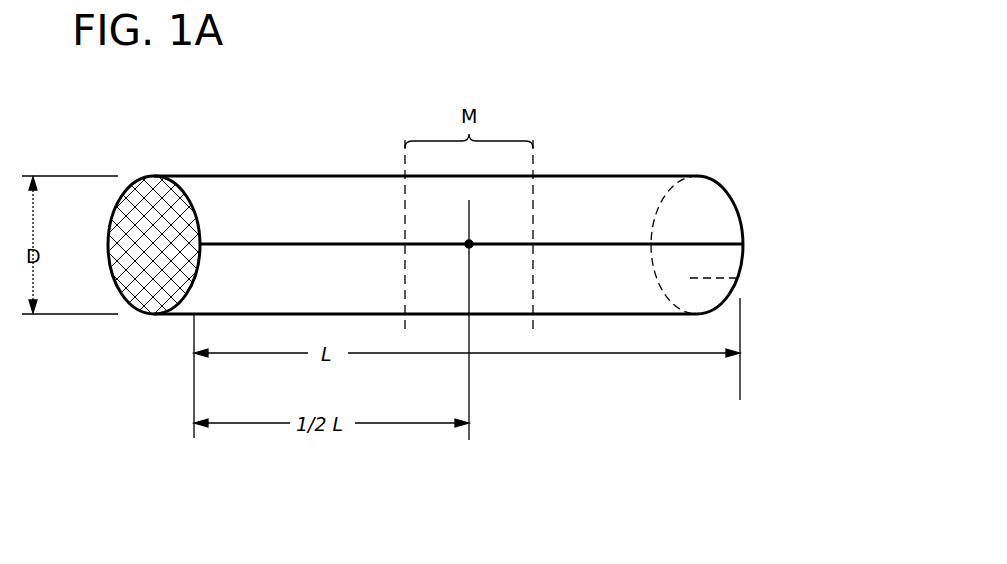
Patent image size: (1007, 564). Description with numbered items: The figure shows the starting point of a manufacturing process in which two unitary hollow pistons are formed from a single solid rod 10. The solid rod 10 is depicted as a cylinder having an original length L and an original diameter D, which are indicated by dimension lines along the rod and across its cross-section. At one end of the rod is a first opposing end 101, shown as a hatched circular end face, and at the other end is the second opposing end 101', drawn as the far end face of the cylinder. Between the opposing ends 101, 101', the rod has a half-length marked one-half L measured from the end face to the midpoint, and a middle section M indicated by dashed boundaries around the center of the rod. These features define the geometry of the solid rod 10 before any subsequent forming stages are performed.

The solid rod 10 is at (606, 116).
The opposing end 101 is at (136, 221).
The opposing end 101' is at (751, 245).